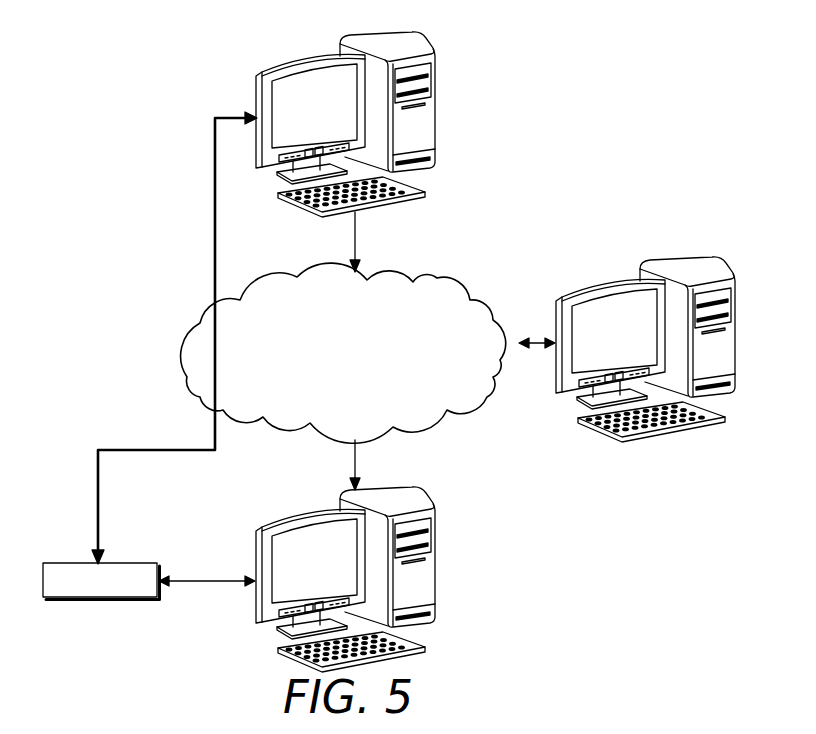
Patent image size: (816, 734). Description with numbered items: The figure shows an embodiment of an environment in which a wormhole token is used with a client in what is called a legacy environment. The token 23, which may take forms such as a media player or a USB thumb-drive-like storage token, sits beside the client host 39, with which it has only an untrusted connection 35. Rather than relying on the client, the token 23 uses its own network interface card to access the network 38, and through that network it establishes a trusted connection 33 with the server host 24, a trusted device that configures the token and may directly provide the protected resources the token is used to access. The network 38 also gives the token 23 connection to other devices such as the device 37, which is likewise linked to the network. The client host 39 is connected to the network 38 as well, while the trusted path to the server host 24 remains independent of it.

The server host 24 is at (437, 60).
The other device 37 is at (675, 256).
The client host 39 is at (408, 497).
The network 38 is at (432, 280).
The token 23 is at (143, 562).
The trusted connection 33 is at (98, 470).
The untrusted connection 35 is at (200, 579).